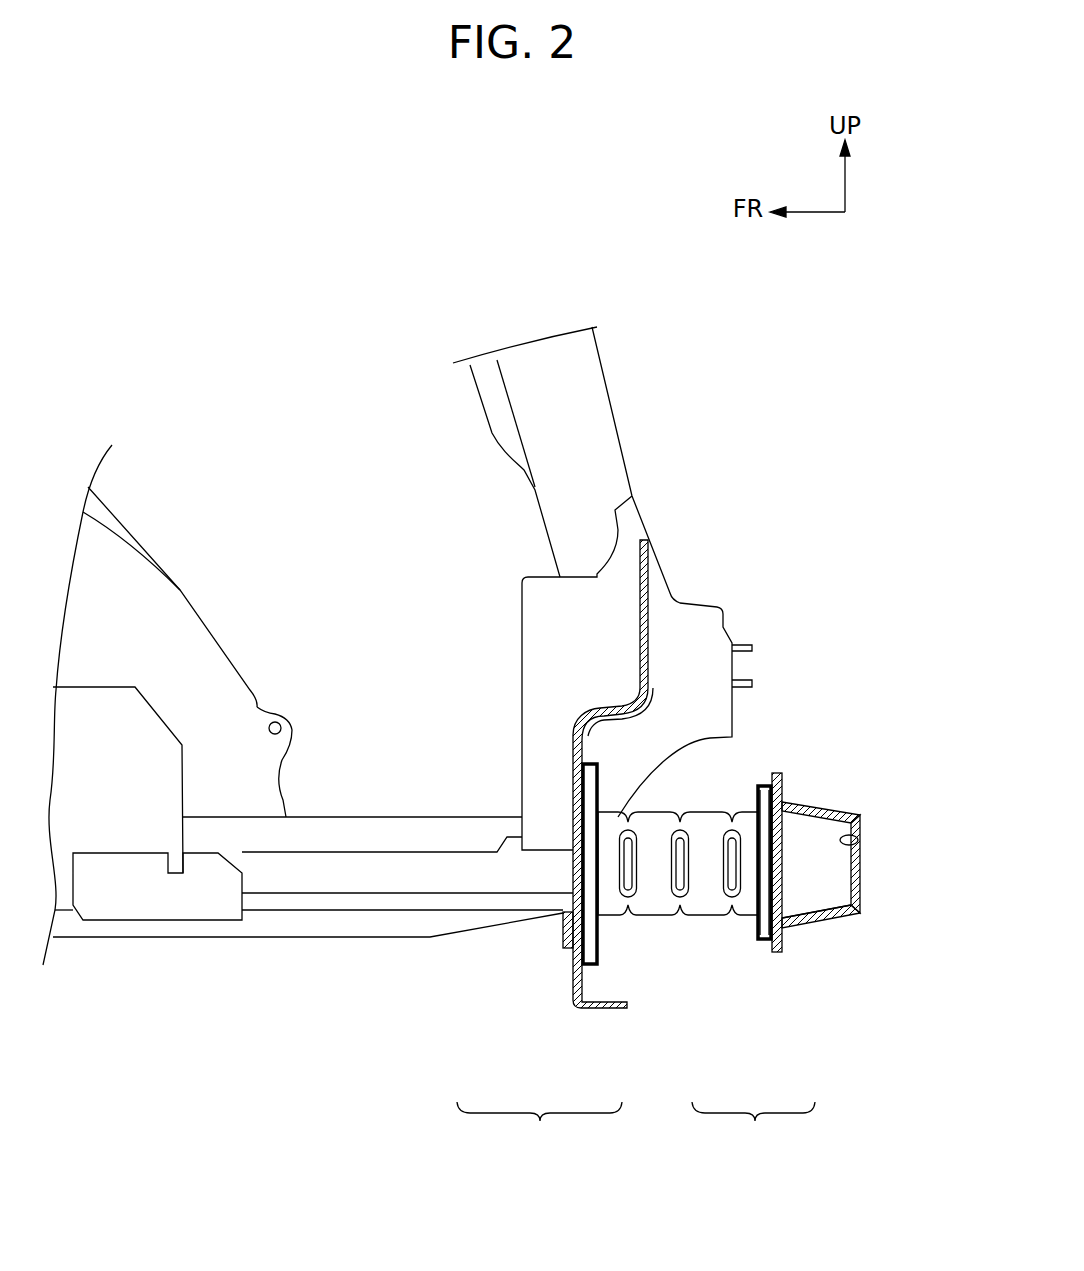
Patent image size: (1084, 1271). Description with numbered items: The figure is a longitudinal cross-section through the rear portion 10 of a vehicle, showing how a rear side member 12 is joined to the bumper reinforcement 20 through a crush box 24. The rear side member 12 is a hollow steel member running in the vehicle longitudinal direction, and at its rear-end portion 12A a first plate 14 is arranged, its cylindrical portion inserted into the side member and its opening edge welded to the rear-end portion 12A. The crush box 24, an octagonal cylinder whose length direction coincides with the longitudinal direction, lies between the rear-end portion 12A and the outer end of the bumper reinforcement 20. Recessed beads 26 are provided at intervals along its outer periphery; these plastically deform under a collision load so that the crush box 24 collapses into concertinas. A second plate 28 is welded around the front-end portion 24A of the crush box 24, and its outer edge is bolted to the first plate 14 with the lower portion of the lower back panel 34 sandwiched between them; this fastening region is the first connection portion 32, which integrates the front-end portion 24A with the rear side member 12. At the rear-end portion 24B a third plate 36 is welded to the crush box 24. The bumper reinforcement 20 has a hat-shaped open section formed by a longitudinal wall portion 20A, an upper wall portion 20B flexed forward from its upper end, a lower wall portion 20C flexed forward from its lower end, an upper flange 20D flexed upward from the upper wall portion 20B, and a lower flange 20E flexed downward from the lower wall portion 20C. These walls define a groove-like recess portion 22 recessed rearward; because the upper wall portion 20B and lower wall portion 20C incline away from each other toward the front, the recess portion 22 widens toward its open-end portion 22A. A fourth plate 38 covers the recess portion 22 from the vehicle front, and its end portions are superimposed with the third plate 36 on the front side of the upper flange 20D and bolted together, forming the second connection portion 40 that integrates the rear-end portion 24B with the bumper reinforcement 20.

The rear portion of a vehicle 10 is at (780, 535).
The rear side member 12 is at (310, 908).
The rear-end portion 12A is at (530, 893).
The first plate 14 is at (563, 930).
The bumper reinforcement 20 is at (869, 876).
The longitudinal wall portion 20A is at (865, 895).
The upper wall portion 20B is at (820, 802).
The lower wall portion 20C is at (820, 922).
The upper flange 20D is at (783, 786).
The lower flange 20E is at (783, 945).
The recess portion 22 is at (858, 842).
The open-end portion 22A is at (784, 912).
The crush box 24 is at (661, 814).
The front-end portion 24A is at (605, 820).
The rear-end portion 24B is at (743, 820).
The recessed beads 26 is at (637, 875).
The second plate 28 is at (598, 930).
The first connection portion 32 is at (539, 1128).
The lower back panel 34 is at (597, 1010).
The third plate 36 is at (757, 897).
The fourth plate 38 is at (756, 937).
The second connection portion 40 is at (753, 1129).